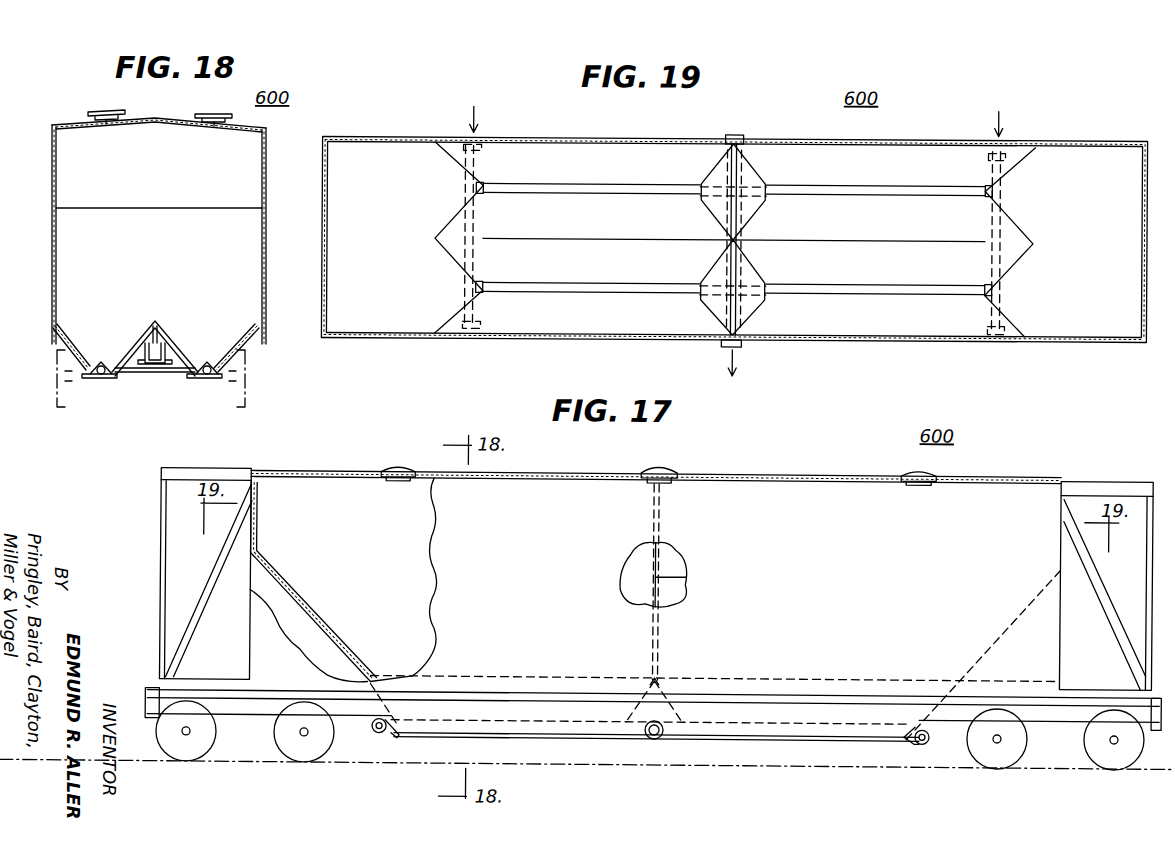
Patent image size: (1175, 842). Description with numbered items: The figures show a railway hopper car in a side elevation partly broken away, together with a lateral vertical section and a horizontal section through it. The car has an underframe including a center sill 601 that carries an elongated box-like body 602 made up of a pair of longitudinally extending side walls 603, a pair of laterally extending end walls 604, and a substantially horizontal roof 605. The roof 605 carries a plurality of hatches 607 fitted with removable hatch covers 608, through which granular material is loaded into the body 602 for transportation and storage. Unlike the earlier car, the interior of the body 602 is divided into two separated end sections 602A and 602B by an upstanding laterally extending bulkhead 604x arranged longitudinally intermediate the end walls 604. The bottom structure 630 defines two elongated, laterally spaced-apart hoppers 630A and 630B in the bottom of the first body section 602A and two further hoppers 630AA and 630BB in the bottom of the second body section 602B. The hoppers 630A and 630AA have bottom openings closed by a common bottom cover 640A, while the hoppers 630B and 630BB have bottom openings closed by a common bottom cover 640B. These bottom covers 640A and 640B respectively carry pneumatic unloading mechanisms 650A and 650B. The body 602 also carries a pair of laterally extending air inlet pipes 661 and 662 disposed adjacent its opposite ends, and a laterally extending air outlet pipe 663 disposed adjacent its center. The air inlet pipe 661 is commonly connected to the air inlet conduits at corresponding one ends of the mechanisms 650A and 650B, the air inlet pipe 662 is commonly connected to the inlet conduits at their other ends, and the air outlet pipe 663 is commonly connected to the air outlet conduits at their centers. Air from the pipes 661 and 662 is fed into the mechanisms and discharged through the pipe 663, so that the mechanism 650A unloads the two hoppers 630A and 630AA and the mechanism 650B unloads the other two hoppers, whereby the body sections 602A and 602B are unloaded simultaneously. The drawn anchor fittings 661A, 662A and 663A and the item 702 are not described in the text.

In FIG. 18, the center sill 601 is at (166, 372).
In FIG. 17, the center sill 601 is at (238, 706).
In FIG. 18, the body 602 is at (50, 243).
In FIG. 19, the body 602 is at (778, 344).
In FIG. 19, the end section 602A is at (410, 308).
In FIG. 19, the end section 602B is at (1068, 318).
In FIG. 18, the side wall 603 is at (57, 255).
In FIG. 19, the side wall 603 is at (597, 139).
In FIG. 17, the side wall 603 is at (545, 488).
In FIG. 18, the end wall 604 is at (258, 170).
In FIG. 19, the end wall 604 is at (328, 256).
In FIG. 17, the end wall 604 is at (257, 530).
In FIG. 19, the bulkhead 604x is at (742, 273).
In FIG. 17, the bulkhead 604x is at (688, 576).
In FIG. 18, the roof 605 is at (156, 124).
In FIG. 18, the hatch 607 is at (105, 125).
In FIG. 17, the hatch 607 is at (663, 484).
In FIG. 18, the hatch cover 608 is at (92, 110).
In FIG. 17, the hatch cover 608 is at (668, 470).
In FIG. 19, the bottom structure 630 is at (600, 238).
In FIG. 18, the hopper 630A is at (97, 352).
In FIG. 19, the hopper 630A is at (600, 287).
In FIG. 18, the hopper 630B is at (204, 352).
In FIG. 19, the hopper 630B is at (607, 185).
In FIG. 19, the hopper 630AA is at (857, 294).
In FIG. 19, the hopper 630BB is at (835, 192).
In FIG. 18, the bottom cover 640A is at (100, 379).
In FIG. 18, the bottom cover 640B is at (206, 379).
In FIG. 18, the pneumatic unloading mechanism 650A is at (85, 364).
In FIG. 17, the pneumatic unloading mechanism 650A is at (490, 730).
In FIG. 18, the pneumatic unloading mechanism 650B is at (218, 366).
In FIG. 19, the air inlet pipe 661 is at (463, 200).
In FIG. 19, the brace anchor 661A is at (483, 150).
In FIG. 17, the brace anchor 661A is at (381, 736).
In FIG. 19, the air inlet pipe 662 is at (1003, 200).
In FIG. 19, the brace anchor 662A is at (988, 156).
In FIG. 17, the brace anchor 662A is at (931, 743).
In FIG. 19, the air outlet pipe 663 is at (740, 238).
In FIG. 19, the center brace anchor 663A is at (742, 134).
In FIG. 17, the center brace anchor 663A is at (662, 738).
In FIG. 17, the hopper body 702 is at (812, 516).